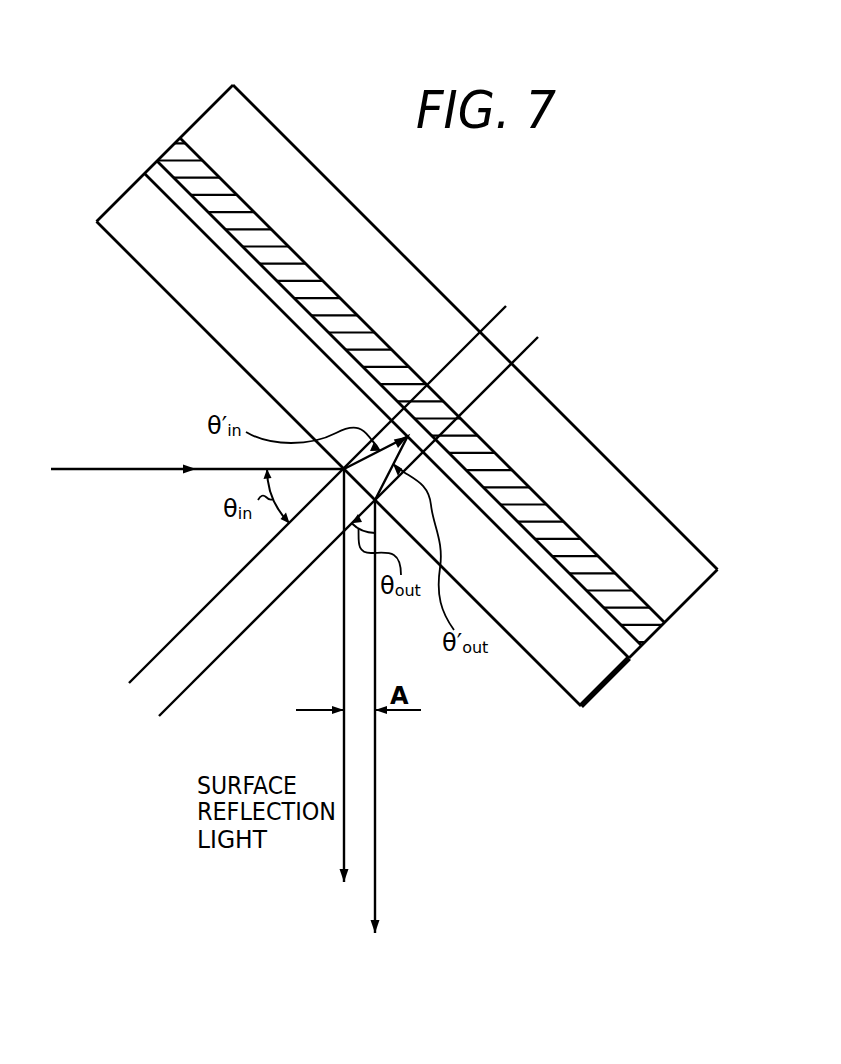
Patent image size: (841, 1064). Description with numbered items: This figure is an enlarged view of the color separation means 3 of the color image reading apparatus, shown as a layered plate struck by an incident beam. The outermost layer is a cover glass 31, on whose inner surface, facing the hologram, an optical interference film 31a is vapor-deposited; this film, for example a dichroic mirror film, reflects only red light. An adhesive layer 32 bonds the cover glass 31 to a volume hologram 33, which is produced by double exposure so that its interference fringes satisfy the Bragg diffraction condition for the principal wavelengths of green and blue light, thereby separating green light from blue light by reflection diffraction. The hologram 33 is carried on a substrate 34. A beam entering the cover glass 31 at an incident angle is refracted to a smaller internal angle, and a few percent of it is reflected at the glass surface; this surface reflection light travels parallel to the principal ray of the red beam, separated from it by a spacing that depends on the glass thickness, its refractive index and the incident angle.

The color separation means 3 is at (189, 19).
The cover glass 31 is at (127, 185).
The optical interference film 31a is at (608, 652).
The adhesive layer 32 is at (152, 163).
The volume hologram 33 is at (177, 137).
The substrate 34 is at (215, 100).